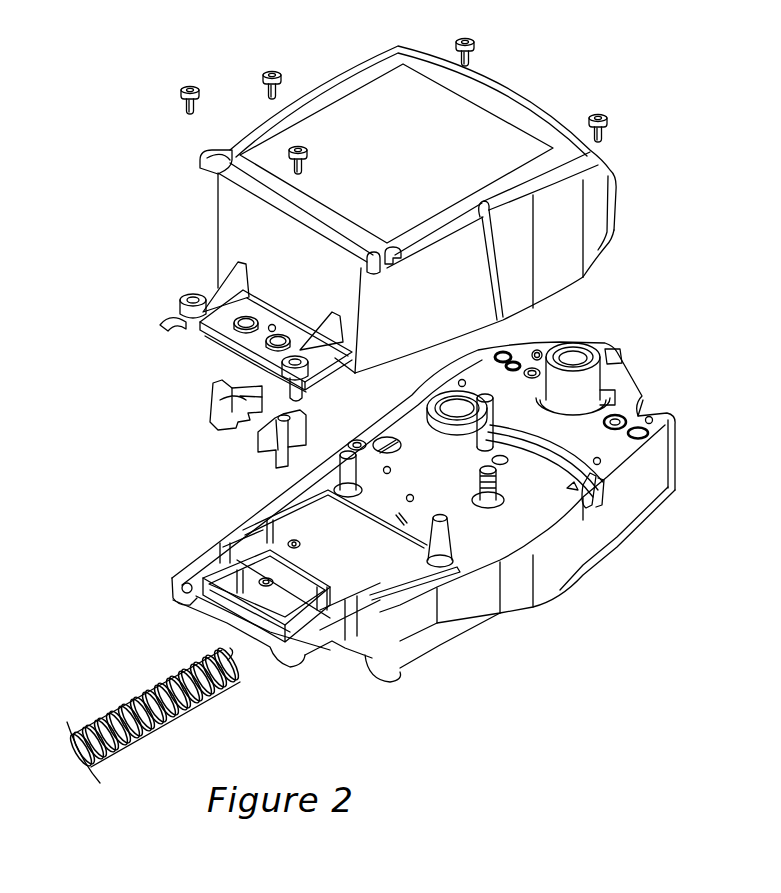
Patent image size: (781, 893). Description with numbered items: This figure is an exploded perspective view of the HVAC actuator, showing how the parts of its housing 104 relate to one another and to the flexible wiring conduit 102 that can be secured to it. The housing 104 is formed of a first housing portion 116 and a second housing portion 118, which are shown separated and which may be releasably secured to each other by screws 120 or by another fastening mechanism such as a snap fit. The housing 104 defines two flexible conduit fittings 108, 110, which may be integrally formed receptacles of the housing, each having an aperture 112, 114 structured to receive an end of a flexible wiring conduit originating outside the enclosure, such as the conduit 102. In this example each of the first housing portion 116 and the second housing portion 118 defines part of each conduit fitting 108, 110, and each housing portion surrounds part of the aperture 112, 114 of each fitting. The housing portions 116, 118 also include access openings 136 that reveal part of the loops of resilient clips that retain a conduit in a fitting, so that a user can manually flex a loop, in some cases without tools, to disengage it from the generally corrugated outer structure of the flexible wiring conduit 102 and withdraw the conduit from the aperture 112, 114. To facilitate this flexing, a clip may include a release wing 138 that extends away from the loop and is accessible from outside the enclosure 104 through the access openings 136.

The flexible wiring conduit 102 is at (150, 702).
The housing 104 is at (237, 232).
The flexible conduit fitting 108 is at (180, 318).
The flexible conduit fitting 110 is at (267, 378).
The aperture 112 is at (180, 582).
The aperture 114 is at (283, 660).
The first housing portion 116 is at (595, 245).
The second housing portion 118 is at (640, 493).
The screws 120 is at (637, 117).
The access openings 136 is at (213, 312).
The release wing 138 is at (210, 415).